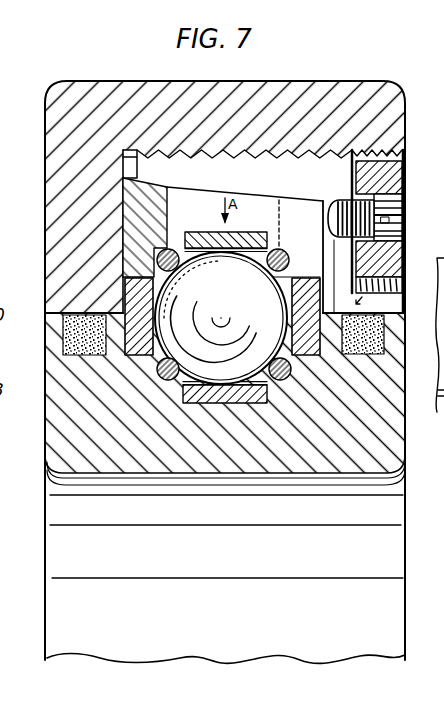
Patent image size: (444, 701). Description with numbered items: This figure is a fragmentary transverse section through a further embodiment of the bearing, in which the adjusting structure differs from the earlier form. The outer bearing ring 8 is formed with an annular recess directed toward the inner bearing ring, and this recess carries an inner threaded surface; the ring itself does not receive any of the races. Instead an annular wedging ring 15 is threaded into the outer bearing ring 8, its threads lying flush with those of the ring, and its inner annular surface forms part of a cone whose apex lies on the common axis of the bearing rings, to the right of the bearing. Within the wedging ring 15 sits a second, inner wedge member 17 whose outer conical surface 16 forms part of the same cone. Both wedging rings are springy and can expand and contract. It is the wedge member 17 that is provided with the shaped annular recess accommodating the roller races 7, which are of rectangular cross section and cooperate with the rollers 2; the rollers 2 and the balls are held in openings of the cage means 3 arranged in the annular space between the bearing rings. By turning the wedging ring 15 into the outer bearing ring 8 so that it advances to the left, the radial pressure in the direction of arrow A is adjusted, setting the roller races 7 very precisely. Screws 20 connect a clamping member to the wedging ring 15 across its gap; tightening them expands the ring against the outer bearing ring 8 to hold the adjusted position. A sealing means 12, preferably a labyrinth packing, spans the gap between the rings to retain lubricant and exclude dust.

The outer bearing ring 8 is at (58, 142).
The wedging ring 15 is at (333, 159).
The outer conical surface 16 is at (252, 193).
The wedge member 17 is at (157, 224).
The wire races 7 is at (242, 232).
The rollers 2 is at (268, 249).
The sealing means 12 is at (76, 327).
The cage means 3 is at (323, 355).
The screws 20 is at (403, 200).